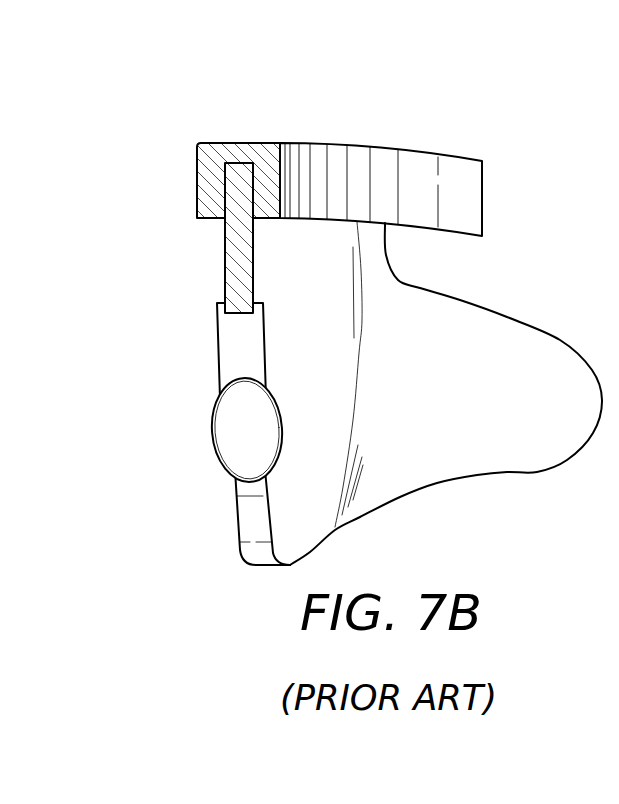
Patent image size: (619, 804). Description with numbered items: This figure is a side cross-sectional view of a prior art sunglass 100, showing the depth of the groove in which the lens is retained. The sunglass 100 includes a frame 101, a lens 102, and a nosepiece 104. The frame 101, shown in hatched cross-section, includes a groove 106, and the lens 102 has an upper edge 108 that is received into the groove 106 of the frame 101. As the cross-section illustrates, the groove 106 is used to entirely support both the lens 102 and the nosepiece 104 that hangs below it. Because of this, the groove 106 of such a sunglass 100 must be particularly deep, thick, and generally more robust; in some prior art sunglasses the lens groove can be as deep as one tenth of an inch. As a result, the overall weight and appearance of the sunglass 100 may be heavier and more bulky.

The sunglass 100 is at (314, 292).
The frame 101 is at (212, 150).
The upper edge 108 is at (243, 162).
The groove 106 is at (225, 198).
The lens 102 is at (224, 285).
The nosepiece 104 is at (234, 445).